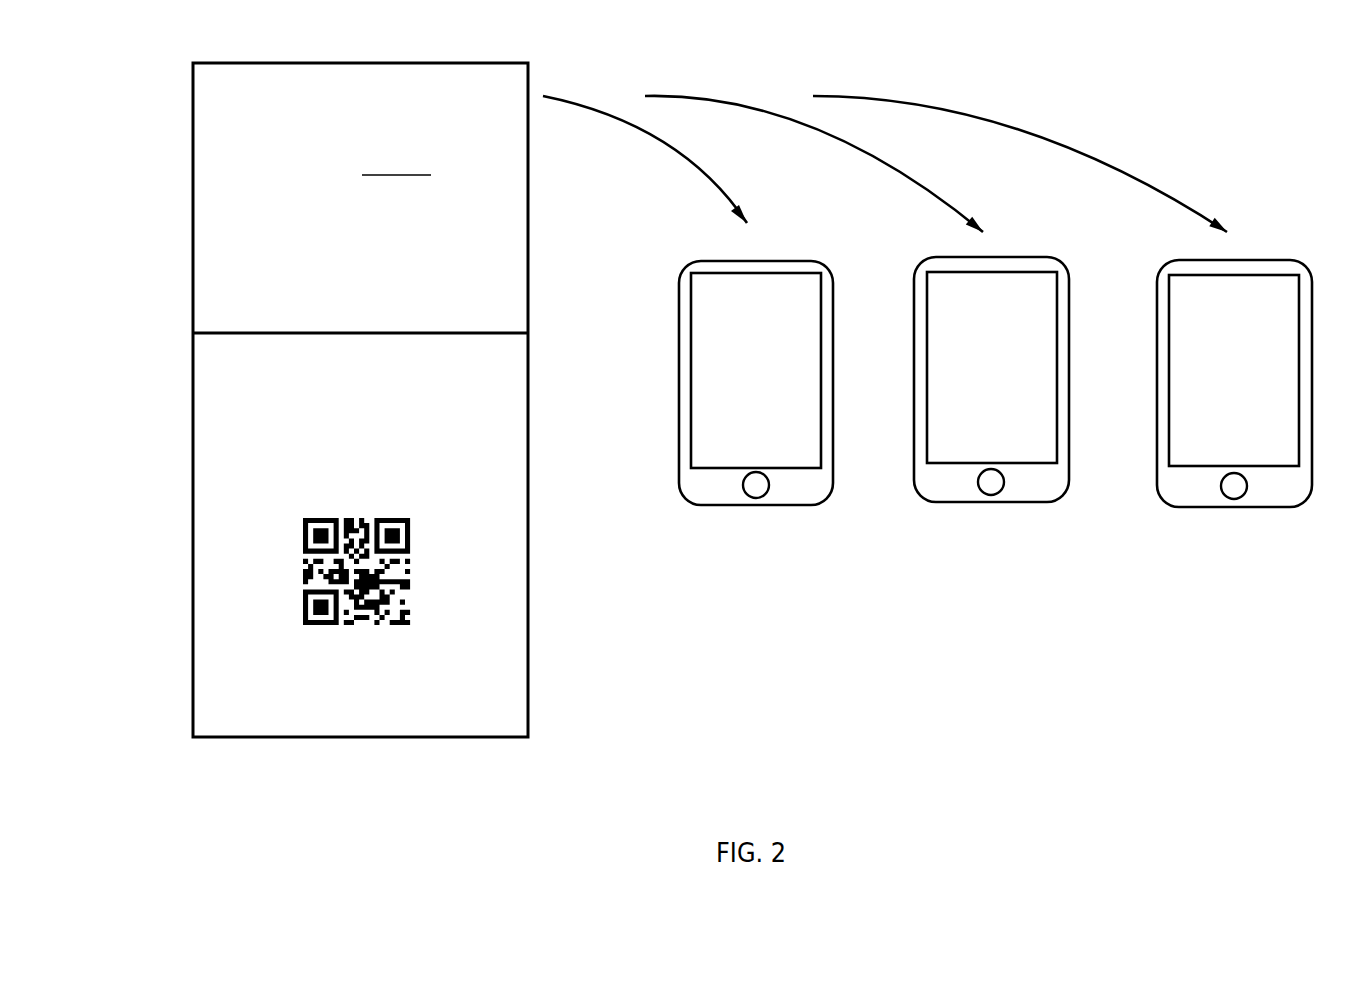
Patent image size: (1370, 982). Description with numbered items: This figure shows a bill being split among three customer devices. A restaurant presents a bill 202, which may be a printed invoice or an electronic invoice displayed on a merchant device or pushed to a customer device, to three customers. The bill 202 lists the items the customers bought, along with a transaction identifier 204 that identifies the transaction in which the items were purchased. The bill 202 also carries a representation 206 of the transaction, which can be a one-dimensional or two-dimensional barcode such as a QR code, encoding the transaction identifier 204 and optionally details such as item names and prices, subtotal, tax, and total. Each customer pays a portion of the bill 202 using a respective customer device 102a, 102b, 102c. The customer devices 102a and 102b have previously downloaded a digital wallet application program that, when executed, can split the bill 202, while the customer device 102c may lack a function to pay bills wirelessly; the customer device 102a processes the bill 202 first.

The bill 202 is at (360, 433).
The transaction identifier 204 is at (410, 174).
The representation 206 is at (402, 573).
The customer device 102a is at (720, 505).
The customer device 102b is at (948, 502).
The customer device 102c is at (1217, 507).